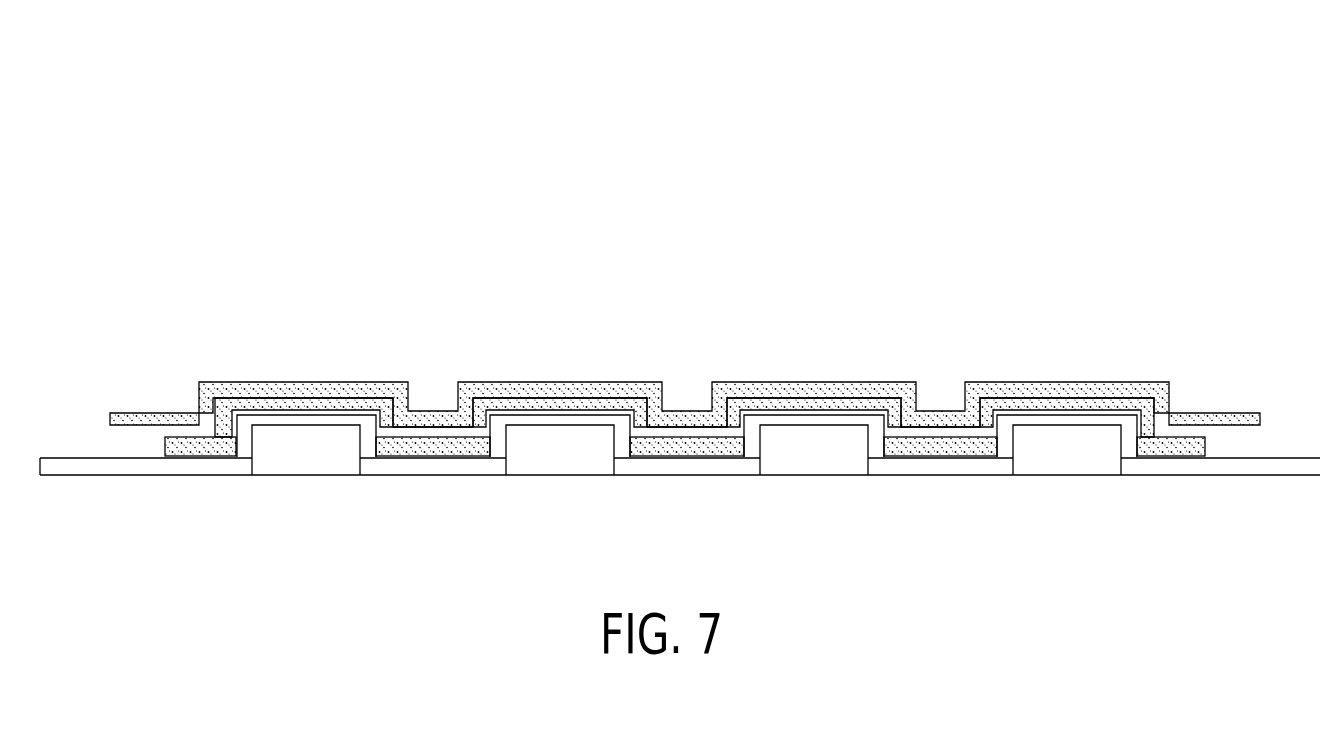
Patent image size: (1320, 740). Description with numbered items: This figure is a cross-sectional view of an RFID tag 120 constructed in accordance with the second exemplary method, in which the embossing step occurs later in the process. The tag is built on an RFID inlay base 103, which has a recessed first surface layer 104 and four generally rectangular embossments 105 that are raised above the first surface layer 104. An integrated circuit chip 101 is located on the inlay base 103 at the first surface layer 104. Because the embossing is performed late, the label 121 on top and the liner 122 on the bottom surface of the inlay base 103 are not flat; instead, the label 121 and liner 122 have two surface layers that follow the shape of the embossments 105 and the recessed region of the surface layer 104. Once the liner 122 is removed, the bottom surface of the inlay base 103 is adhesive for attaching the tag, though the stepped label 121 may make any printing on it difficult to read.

The RFID tag 120 is at (998, 100).
The label 121 is at (272, 384).
The embossments 105 is at (522, 407).
The integrated circuit chip 101 is at (683, 423).
The first surface layer 104 is at (940, 426).
The RFID inlay base 103 is at (1178, 445).
The liner 122 is at (120, 476).